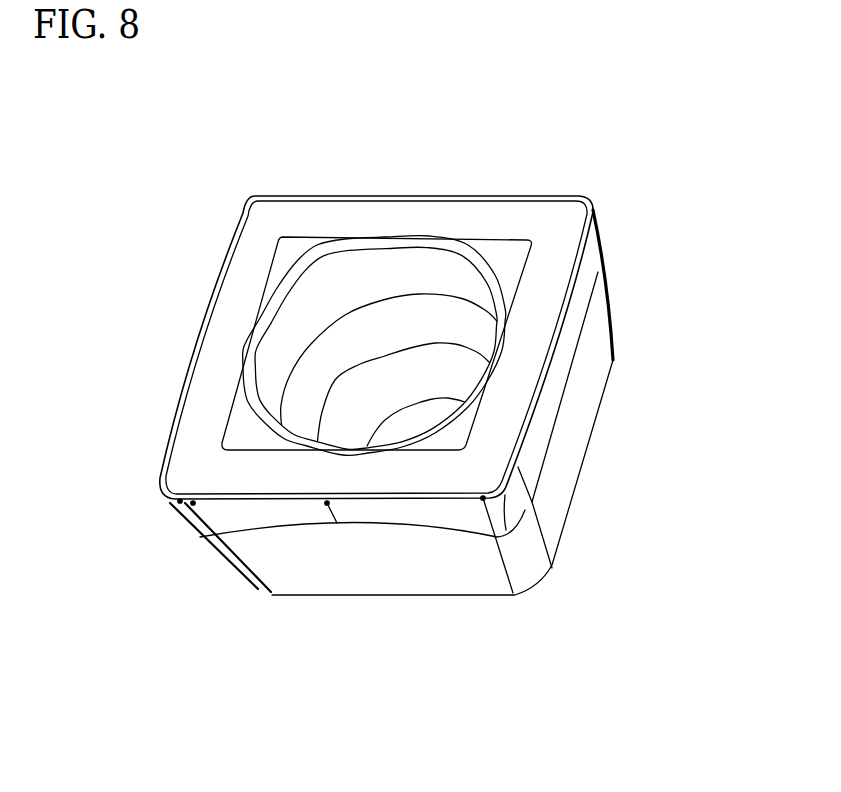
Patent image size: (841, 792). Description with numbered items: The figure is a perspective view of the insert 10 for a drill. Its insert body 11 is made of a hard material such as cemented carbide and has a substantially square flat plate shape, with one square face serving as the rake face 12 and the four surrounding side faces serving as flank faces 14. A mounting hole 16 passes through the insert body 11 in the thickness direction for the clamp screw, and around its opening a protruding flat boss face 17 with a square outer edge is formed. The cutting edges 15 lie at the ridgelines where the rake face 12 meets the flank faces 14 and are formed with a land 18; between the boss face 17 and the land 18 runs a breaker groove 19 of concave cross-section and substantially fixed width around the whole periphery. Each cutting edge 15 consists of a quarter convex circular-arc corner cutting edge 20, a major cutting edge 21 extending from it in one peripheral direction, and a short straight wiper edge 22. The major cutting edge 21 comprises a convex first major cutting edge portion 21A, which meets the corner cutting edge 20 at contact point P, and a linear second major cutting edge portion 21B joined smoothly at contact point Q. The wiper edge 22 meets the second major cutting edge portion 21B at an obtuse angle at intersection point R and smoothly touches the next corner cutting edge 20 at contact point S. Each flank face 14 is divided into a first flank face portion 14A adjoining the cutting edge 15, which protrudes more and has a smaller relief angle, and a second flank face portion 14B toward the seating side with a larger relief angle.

The insert for a drill 10 is at (415, 427).
The insert body 11 is at (595, 243).
The rake face 12 is at (256, 466).
The flank faces 14 is at (458, 460).
The first flank face portion 14A is at (543, 412).
The second flank face portion 14B is at (570, 468).
The cutting edges 15 is at (428, 190).
The mounting hole 16 is at (353, 290).
The boss face 17 is at (283, 267).
The land 18 is at (167, 457).
The breaker groove 19 is at (205, 409).
The corner cutting edge 20 is at (483, 592).
The major cutting edge 21 is at (335, 604).
The first major cutting edge portion 21A is at (407, 505).
The second major cutting edge portion 21B is at (260, 505).
The wiper edge 22 is at (183, 510).
The contact point P is at (483, 500).
The contact point Q is at (327, 505).
The intersection point R is at (194, 500).
The contact point S is at (178, 504).